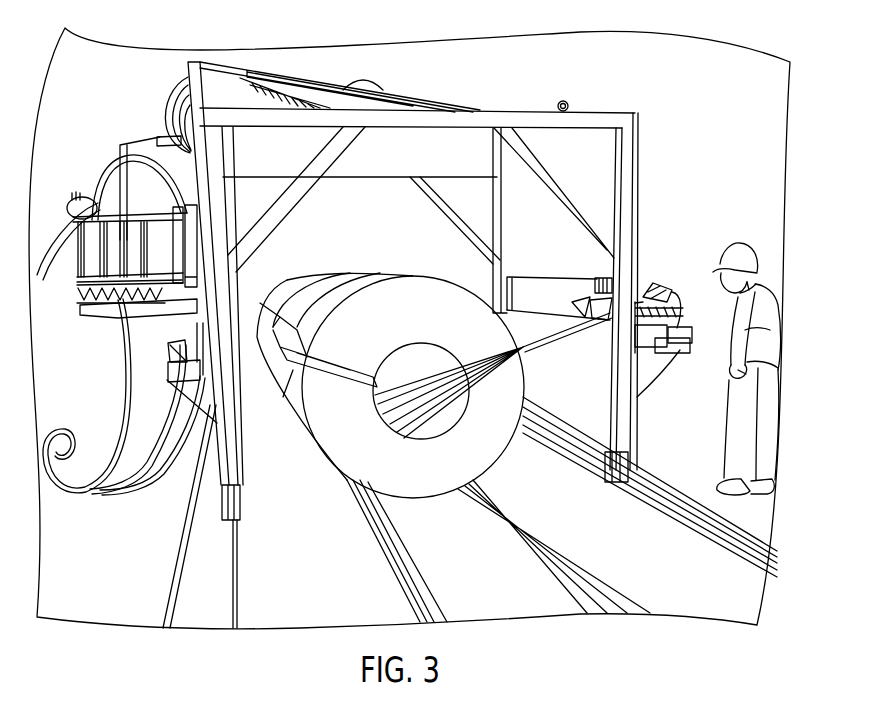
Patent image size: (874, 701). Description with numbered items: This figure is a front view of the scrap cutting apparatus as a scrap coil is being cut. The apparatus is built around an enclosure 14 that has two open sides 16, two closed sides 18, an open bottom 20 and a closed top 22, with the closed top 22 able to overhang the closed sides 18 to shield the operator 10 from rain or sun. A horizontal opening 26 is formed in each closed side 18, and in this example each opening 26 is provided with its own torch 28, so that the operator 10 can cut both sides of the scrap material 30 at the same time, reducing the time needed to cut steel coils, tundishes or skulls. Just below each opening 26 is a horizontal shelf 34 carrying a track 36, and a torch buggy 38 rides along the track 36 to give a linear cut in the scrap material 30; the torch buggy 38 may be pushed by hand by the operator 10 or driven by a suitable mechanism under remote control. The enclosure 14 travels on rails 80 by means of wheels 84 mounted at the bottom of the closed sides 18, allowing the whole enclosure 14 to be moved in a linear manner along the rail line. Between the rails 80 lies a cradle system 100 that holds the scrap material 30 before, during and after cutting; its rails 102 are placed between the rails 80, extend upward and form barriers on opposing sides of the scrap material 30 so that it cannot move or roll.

The operator 10 is at (737, 252).
The enclosure 14 is at (166, 159).
The open sides 16 is at (230, 305).
The closed sides 18 is at (598, 180).
The open bottom 20 is at (320, 502).
The closed top 22 is at (493, 120).
The opening 26 is at (535, 287).
The torch 28 is at (567, 330).
The scrap material 30 is at (430, 482).
The horizontal shelf 34 is at (170, 378).
The track 36 is at (182, 348).
The torch buggy 38 is at (603, 302).
The rails 80 is at (236, 577).
The wheels 84 is at (227, 507).
The cradle system 100 is at (437, 557).
The rails of the cradle system 102 is at (420, 592).